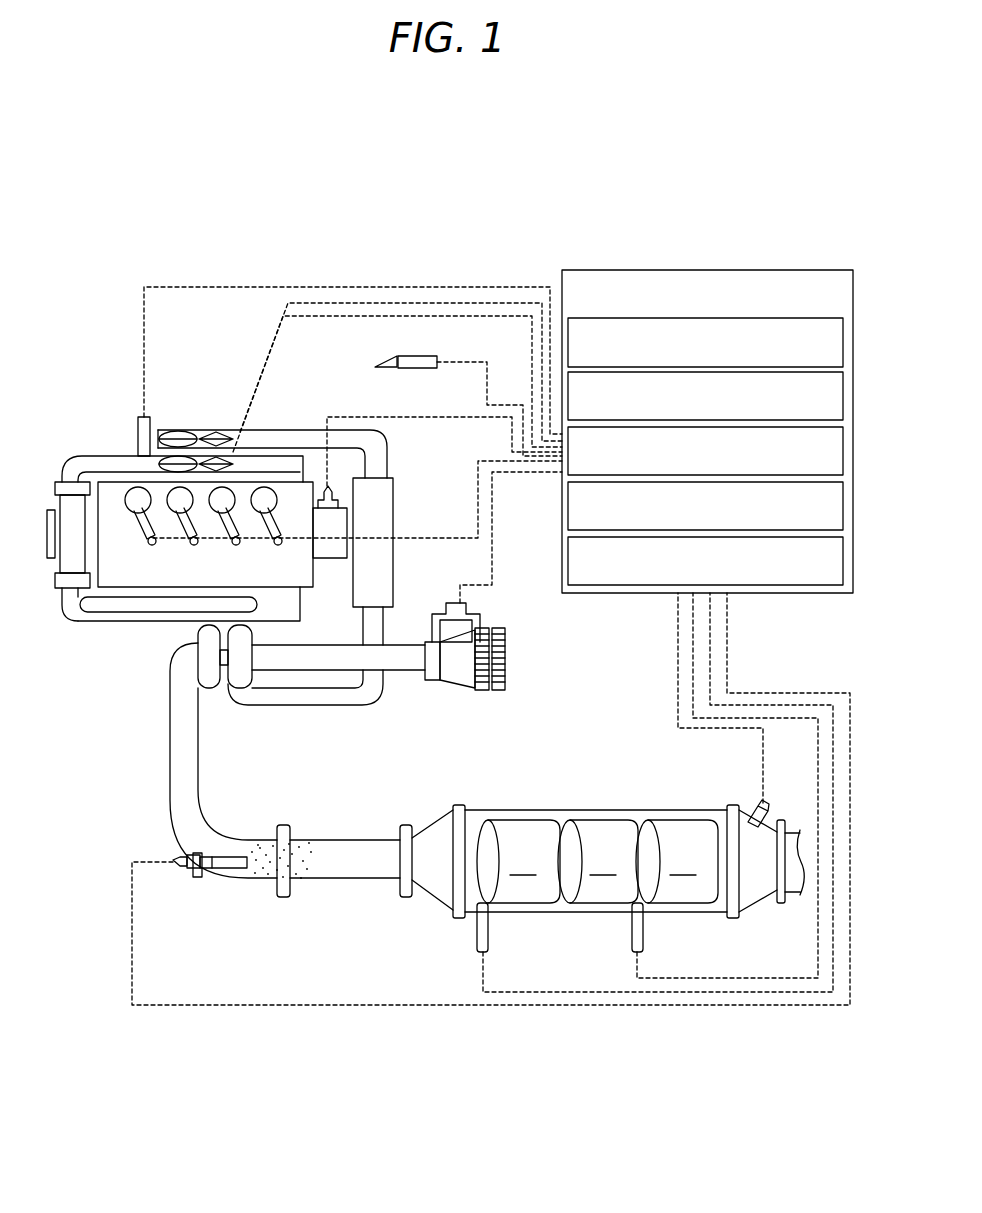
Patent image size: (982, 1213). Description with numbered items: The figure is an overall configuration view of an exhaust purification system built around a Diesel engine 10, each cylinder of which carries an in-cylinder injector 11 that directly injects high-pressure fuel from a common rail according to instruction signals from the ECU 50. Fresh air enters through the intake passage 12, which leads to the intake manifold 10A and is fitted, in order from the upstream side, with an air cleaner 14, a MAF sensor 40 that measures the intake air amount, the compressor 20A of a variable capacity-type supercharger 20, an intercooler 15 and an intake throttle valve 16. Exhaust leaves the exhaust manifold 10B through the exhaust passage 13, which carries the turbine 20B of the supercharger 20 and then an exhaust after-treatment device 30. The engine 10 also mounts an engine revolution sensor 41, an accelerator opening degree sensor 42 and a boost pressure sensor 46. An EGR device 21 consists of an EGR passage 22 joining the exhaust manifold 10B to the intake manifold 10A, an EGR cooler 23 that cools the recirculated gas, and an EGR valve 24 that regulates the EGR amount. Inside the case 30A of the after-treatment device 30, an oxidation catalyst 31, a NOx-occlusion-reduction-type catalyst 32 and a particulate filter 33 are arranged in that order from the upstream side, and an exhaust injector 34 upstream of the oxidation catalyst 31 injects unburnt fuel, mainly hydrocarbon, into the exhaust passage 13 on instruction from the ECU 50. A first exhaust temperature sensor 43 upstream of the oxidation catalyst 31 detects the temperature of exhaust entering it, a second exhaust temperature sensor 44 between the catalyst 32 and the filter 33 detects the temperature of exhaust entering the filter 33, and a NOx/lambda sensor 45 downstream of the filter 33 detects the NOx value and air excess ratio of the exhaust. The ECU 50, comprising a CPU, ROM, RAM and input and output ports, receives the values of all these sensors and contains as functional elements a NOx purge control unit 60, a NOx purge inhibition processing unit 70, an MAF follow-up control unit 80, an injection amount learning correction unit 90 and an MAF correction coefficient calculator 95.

The Diesel engine 10 is at (285, 482).
The intake manifold 10A is at (108, 456).
The exhaust manifold 10B is at (125, 622).
The in-cylinder injector 11 is at (133, 550).
The intake passage 12 is at (311, 699).
The exhaust passage 13 is at (170, 740).
The air cleaner 14 is at (488, 628).
The intercooler 15 is at (393, 500).
The intake throttle valve 16 is at (206, 430).
The variable capacity-type supercharger 20 is at (246, 699).
The compressor 20A is at (208, 690).
The turbine 20B is at (217, 744).
The EGR device 21 is at (62, 446).
The EGR passage 22 is at (85, 615).
The EGR cooler 23 is at (62, 533).
The EGR valve 24 is at (182, 432).
The exhaust after-treatment device 30 is at (628, 824).
The case 30A is at (493, 810).
The oxidation catalyst 31 is at (518, 861).
The NOx-occlusion-reduction-type catalyst 32 is at (598, 861).
The particulate filter 33 is at (677, 861).
The exhaust injector 34 is at (222, 873).
The MAF sensor 40 is at (455, 603).
The engine revolution sensor 41 is at (331, 490).
The accelerator opening degree sensor 42 is at (412, 356).
The first exhaust temperature sensor 43 is at (490, 930).
The second exhaust temperature sensor 44 is at (645, 930).
The NOx/lambda sensor 45 is at (752, 806).
The boost pressure sensor 46 is at (137, 416).
The ECU 50 is at (683, 268).
The NOx purge control unit 60 is at (843, 347).
The NOx purge inhibition processing unit 70 is at (843, 398).
The MAF follow-up control unit 80 is at (843, 451).
The injection amount learning correction unit 90 is at (843, 509).
The MAF correction coefficient calculator 95 is at (843, 563).